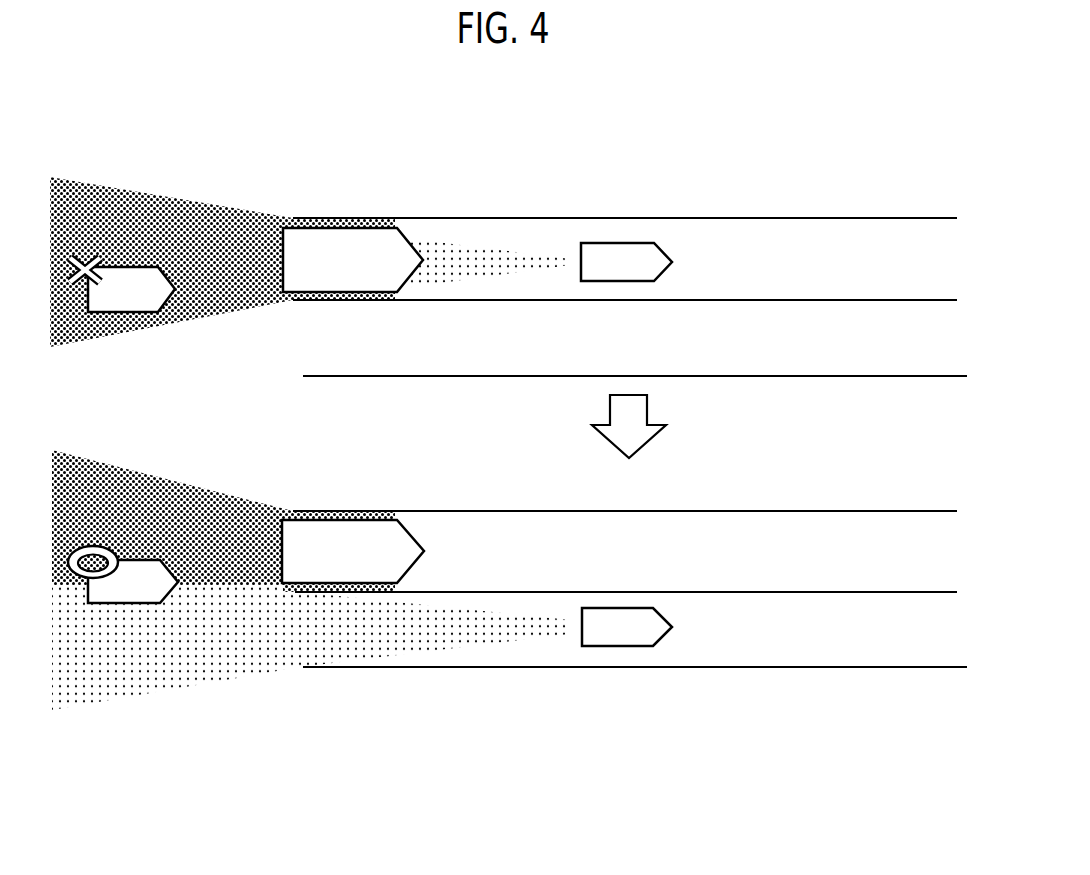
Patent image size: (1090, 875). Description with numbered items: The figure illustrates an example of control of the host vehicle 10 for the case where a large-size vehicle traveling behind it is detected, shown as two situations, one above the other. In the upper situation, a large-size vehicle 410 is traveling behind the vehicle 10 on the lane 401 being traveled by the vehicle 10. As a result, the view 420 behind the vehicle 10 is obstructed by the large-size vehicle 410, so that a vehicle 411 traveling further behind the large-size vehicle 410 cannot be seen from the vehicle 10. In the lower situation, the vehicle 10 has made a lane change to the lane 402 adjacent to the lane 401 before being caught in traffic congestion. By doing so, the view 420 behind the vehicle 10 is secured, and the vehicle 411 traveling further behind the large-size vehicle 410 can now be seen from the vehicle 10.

The vehicle 10 is at (620, 253).
The lane 401 is at (829, 242).
The lane 402 is at (836, 643).
The large-size vehicle 410 is at (340, 245).
The vehicle 411 is at (127, 302).
The view 420 is at (485, 260).